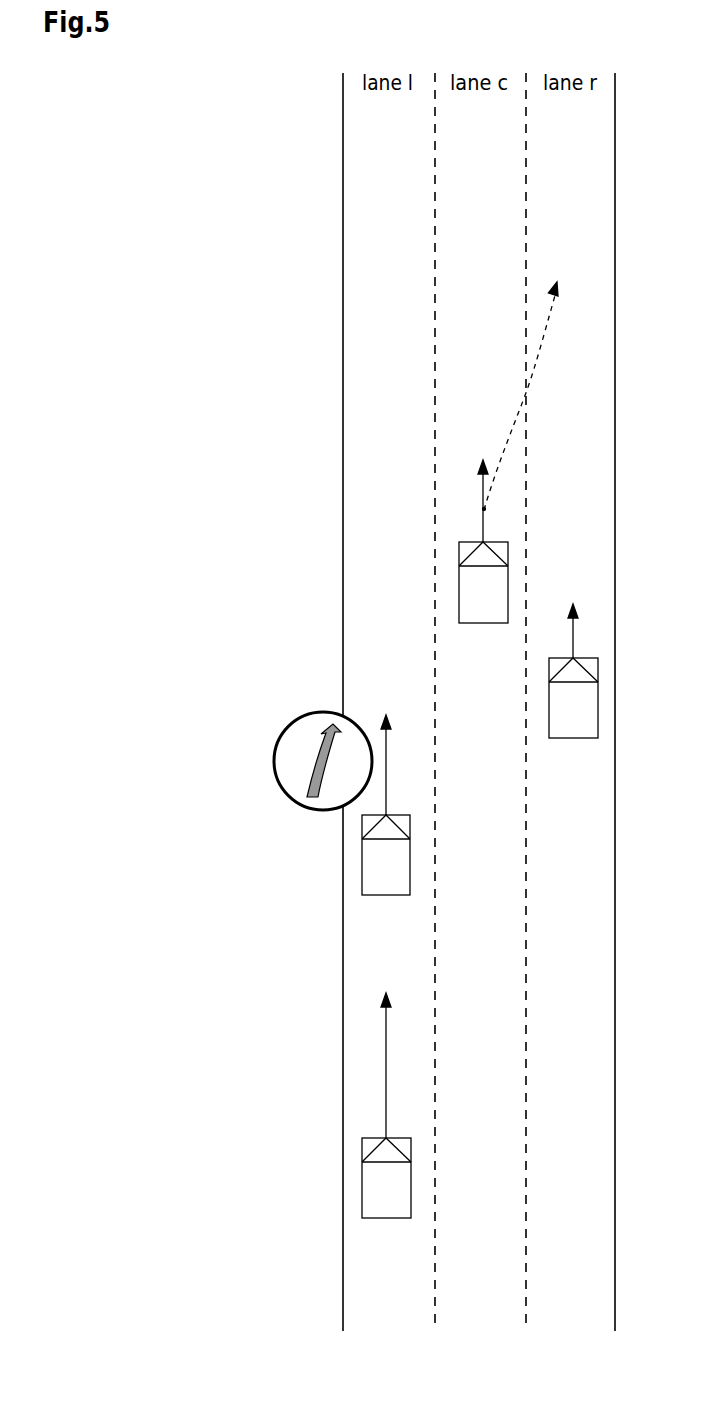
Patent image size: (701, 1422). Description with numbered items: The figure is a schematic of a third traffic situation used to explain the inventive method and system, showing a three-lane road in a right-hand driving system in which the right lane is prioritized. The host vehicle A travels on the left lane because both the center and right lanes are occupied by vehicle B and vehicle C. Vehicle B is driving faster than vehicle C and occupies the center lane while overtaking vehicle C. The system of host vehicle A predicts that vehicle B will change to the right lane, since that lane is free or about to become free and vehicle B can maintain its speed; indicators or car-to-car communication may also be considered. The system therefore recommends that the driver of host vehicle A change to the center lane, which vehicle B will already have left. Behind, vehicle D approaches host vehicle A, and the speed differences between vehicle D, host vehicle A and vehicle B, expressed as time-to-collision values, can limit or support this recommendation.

The host vehicle A is at (386, 805).
The vehicle B is at (508, 452).
The vehicle C is at (573, 671).
The vehicle D is at (386, 1105).